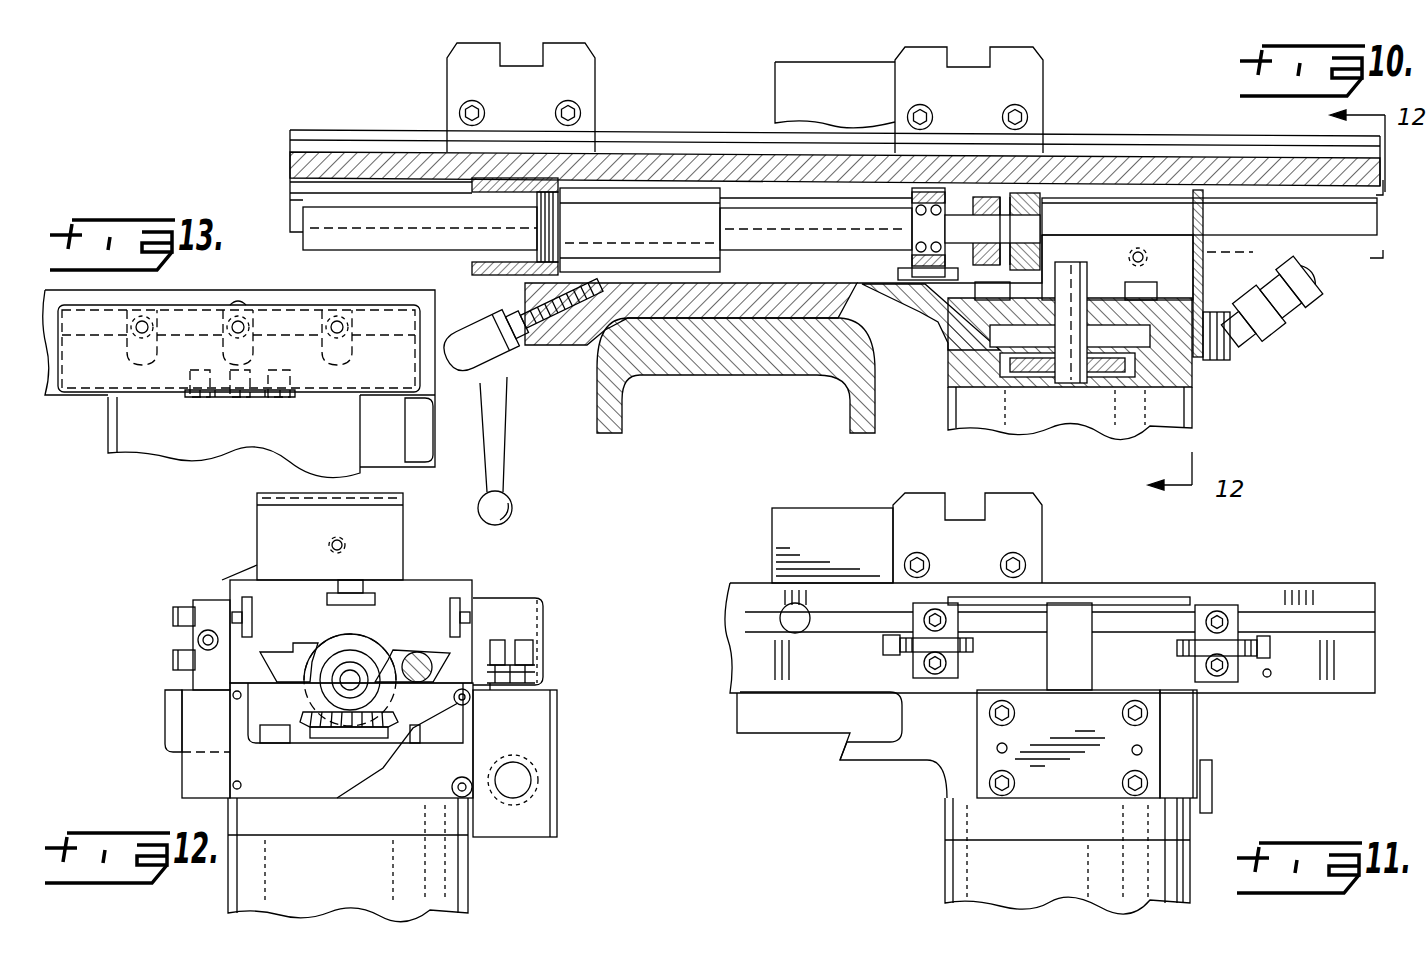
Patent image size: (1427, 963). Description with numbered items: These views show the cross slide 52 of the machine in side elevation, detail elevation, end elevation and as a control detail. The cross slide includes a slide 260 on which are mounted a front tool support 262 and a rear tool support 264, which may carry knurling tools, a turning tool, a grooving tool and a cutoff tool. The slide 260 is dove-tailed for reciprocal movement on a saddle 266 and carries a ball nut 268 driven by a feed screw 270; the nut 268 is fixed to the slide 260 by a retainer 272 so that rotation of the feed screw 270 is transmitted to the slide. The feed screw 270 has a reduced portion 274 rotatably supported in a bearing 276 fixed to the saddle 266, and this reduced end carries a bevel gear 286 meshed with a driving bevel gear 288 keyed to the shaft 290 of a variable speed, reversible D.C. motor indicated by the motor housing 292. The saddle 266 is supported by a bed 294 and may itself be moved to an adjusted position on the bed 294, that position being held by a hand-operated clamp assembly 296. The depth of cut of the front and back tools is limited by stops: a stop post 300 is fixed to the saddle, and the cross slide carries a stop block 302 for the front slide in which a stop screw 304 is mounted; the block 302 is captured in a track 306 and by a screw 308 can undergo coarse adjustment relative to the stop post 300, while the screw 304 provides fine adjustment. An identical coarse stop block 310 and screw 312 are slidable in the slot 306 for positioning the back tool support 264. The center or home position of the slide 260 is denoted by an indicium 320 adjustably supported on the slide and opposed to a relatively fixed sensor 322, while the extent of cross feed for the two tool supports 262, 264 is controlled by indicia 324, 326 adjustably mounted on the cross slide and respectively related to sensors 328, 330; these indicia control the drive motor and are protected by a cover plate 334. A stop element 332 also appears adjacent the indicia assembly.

In FIG. 10, the cross slide 52 is at (366, 126).
In FIG. 12, the cross slide 52 is at (423, 578).
In FIG. 11, the cross slide 52 is at (1343, 580).
In FIG. 10, the slide 260 is at (1193, 136).
In FIG. 13, the slide 260 is at (190, 290).
In FIG. 12, the slide 260 is at (474, 586).
In FIG. 11, the slide 260 is at (1155, 583).
In FIG. 10, the front tool support 262 is at (594, 93).
In FIG. 10, the rear tool support 264 is at (1043, 88).
In FIG. 12, the rear tool support 264 is at (257, 522).
In FIG. 11, the rear tool support 264 is at (1043, 527).
In FIG. 10, the saddle 266 is at (940, 315).
In FIG. 13, the saddle 266 is at (400, 466).
In FIG. 12, the saddle 266 is at (277, 660).
In FIG. 11, the saddle 266 is at (932, 770).
In FIG. 10, the ball nut 268 is at (706, 231).
In FIG. 10, the feed screw 270 is at (312, 230).
In FIG. 10, the retainer 272 is at (516, 278).
In FIG. 10, the reduced portion 274 is at (913, 232).
In FIG. 12, the reduced portion 274 is at (341, 681).
In FIG. 10, the bearing 276 is at (930, 184).
In FIG. 10, the bevel gear 286 is at (1040, 209).
In FIG. 12, the bevel gear 286 is at (391, 688).
In FIG. 10, the driving bevel gear 288 is at (1106, 292).
In FIG. 12, the driving bevel gear 288 is at (342, 729).
In FIG. 10, the shaft 290 is at (1078, 380).
In FIG. 10, the motor housing 292 is at (1130, 434).
In FIG. 12, the motor housing 292 is at (356, 905).
In FIG. 11, the motor housing 292 is at (947, 886).
In FIG. 10, the bed 294 is at (745, 368).
In FIG. 10, the clamp assembly 296 is at (518, 386).
In FIG. 11, the stop post 300 is at (1082, 666).
In FIG. 11, the stop block 302 is at (958, 668).
In FIG. 11, the stop screw 304 is at (905, 656).
In FIG. 12, the track 306 is at (253, 614).
In FIG. 11, the track 306 is at (843, 623).
In FIG. 12, the screw 308 is at (173, 615).
In FIG. 11, the screw 308 is at (936, 607).
In FIG. 12, the stop block 310 is at (195, 592).
In FIG. 11, the stop block 310 is at (1242, 600).
In FIG. 12, the screw 312 is at (197, 640).
In FIG. 11, the screw 312 is at (1271, 672).
In FIG. 13, the indicium 320 is at (255, 352).
In FIG. 12, the indicium 320 is at (502, 642).
In FIG. 13, the sensor 322 is at (232, 405).
In FIG. 12, the sensor 322 is at (490, 692).
In FIG. 13, the indicium 324 is at (345, 362).
In FIG. 13, the indicium 326 is at (129, 354).
In FIG. 12, the indicium 326 is at (522, 656).
In FIG. 13, the sensor 328 is at (287, 373).
In FIG. 13, the sensor 330 is at (206, 368).
In FIG. 12, the sensor 330 is at (525, 670).
In FIG. 13, the stop 332 is at (438, 310).
In FIG. 12, the stop 332 is at (450, 620).
In FIG. 13, the cover plate 334 is at (373, 278).
In FIG. 12, the cover plate 334 is at (522, 616).